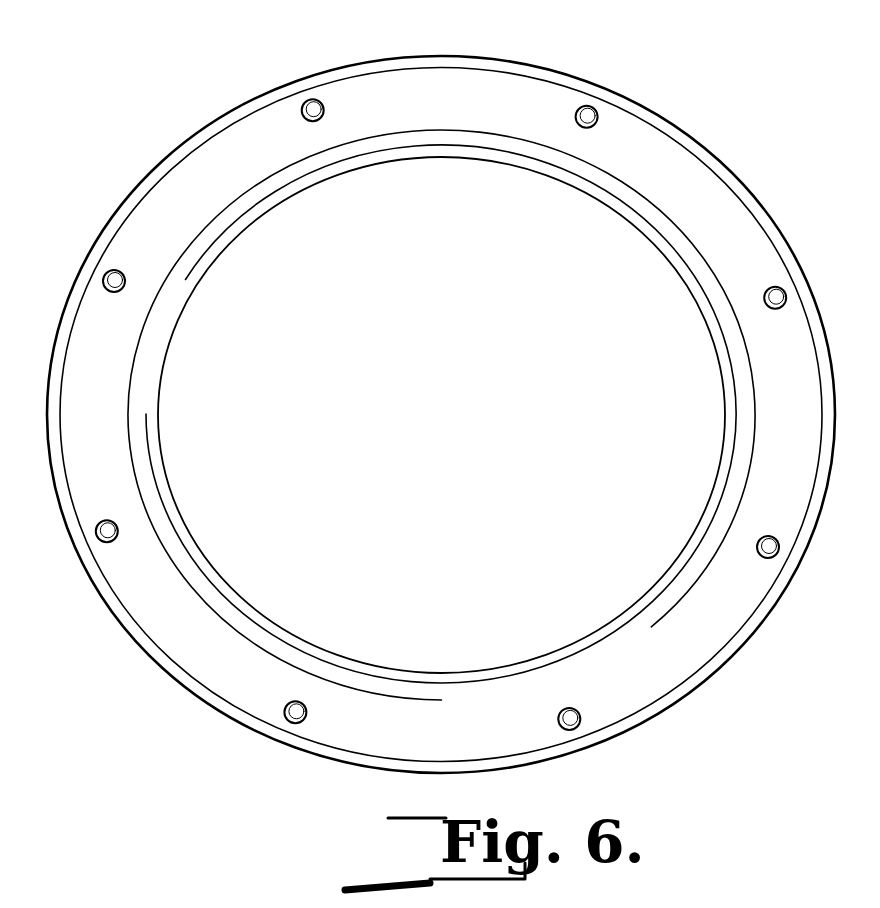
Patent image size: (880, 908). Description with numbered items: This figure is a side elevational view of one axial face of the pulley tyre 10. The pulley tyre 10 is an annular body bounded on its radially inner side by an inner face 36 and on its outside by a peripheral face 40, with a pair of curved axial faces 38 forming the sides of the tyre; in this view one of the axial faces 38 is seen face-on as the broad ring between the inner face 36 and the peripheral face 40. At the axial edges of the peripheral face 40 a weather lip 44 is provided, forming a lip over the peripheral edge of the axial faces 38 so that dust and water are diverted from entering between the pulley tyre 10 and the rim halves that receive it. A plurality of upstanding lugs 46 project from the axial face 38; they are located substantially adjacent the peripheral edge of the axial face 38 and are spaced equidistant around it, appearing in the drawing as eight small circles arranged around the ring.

The pulley tyre 10 is at (432, 388).
The inner face 36 is at (314, 183).
The curved axial faces 38 is at (470, 113).
The peripheral face 40 is at (85, 261).
The weather lip 44 is at (238, 112).
The lugs 46 is at (592, 109).